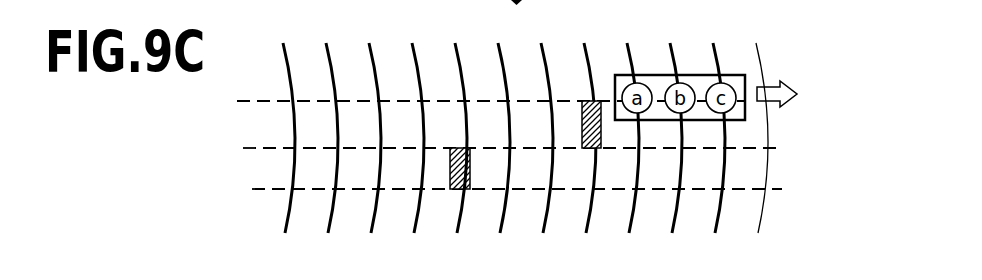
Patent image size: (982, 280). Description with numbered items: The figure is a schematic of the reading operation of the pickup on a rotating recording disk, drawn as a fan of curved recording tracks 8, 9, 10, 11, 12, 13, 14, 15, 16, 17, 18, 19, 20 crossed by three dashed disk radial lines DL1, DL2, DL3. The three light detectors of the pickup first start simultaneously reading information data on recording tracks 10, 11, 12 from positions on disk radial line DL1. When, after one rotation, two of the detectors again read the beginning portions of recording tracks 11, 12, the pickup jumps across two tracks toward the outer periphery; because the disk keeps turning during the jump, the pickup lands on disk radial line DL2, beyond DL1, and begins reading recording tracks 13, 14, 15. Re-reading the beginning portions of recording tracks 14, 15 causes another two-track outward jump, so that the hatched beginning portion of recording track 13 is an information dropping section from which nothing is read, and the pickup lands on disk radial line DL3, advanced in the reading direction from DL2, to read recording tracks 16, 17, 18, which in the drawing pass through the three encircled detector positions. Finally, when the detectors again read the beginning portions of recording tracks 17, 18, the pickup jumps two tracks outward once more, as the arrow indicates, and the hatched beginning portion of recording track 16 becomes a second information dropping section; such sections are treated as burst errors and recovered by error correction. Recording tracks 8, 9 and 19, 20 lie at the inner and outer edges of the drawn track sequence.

The track 8 is at (321, 141).
The track 9 is at (321, 141).
The recording track 10 is at (345, 141).
The recording track 11 is at (387, 141).
The recording track 12 is at (434, 141).
The recording track 13 is at (473, 141).
The recording track 14 is at (516, 141).
The recording track 15 is at (560, 141).
The recording track 16 is at (603, 141).
The recording track 17 is at (646, 141).
The recording track 18 is at (689, 141).
The track 19 is at (732, 141).
The track 20 is at (756, 126).
The disk radial line DL1 is at (502, 226).
The disk radial line DL2 is at (493, 176).
The disk radial line DL3 is at (468, 129).